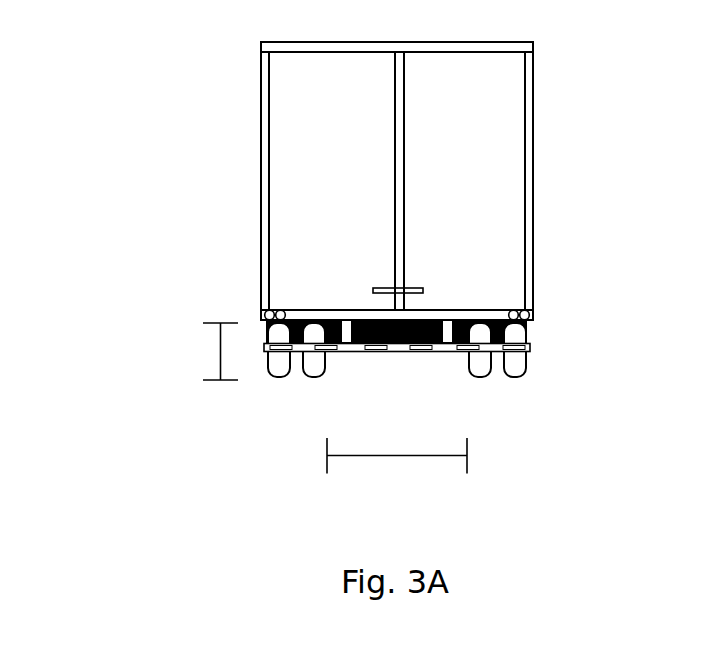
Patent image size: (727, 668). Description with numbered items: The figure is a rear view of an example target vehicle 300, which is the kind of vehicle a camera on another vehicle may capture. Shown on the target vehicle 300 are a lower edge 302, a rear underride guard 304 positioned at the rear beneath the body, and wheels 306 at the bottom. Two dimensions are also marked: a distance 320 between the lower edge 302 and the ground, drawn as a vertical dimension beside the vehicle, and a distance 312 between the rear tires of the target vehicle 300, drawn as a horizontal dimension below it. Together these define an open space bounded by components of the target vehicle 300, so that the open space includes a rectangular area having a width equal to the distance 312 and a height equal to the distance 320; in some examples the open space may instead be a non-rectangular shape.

The target vehicle 300 is at (172, 64).
The lower edge 302 is at (505, 321).
The rear underride guard 304 is at (400, 349).
The wheels 306 is at (316, 373).
The distance between rear tires 312 is at (398, 457).
The distance between lower edge and ground 320 is at (219, 352).